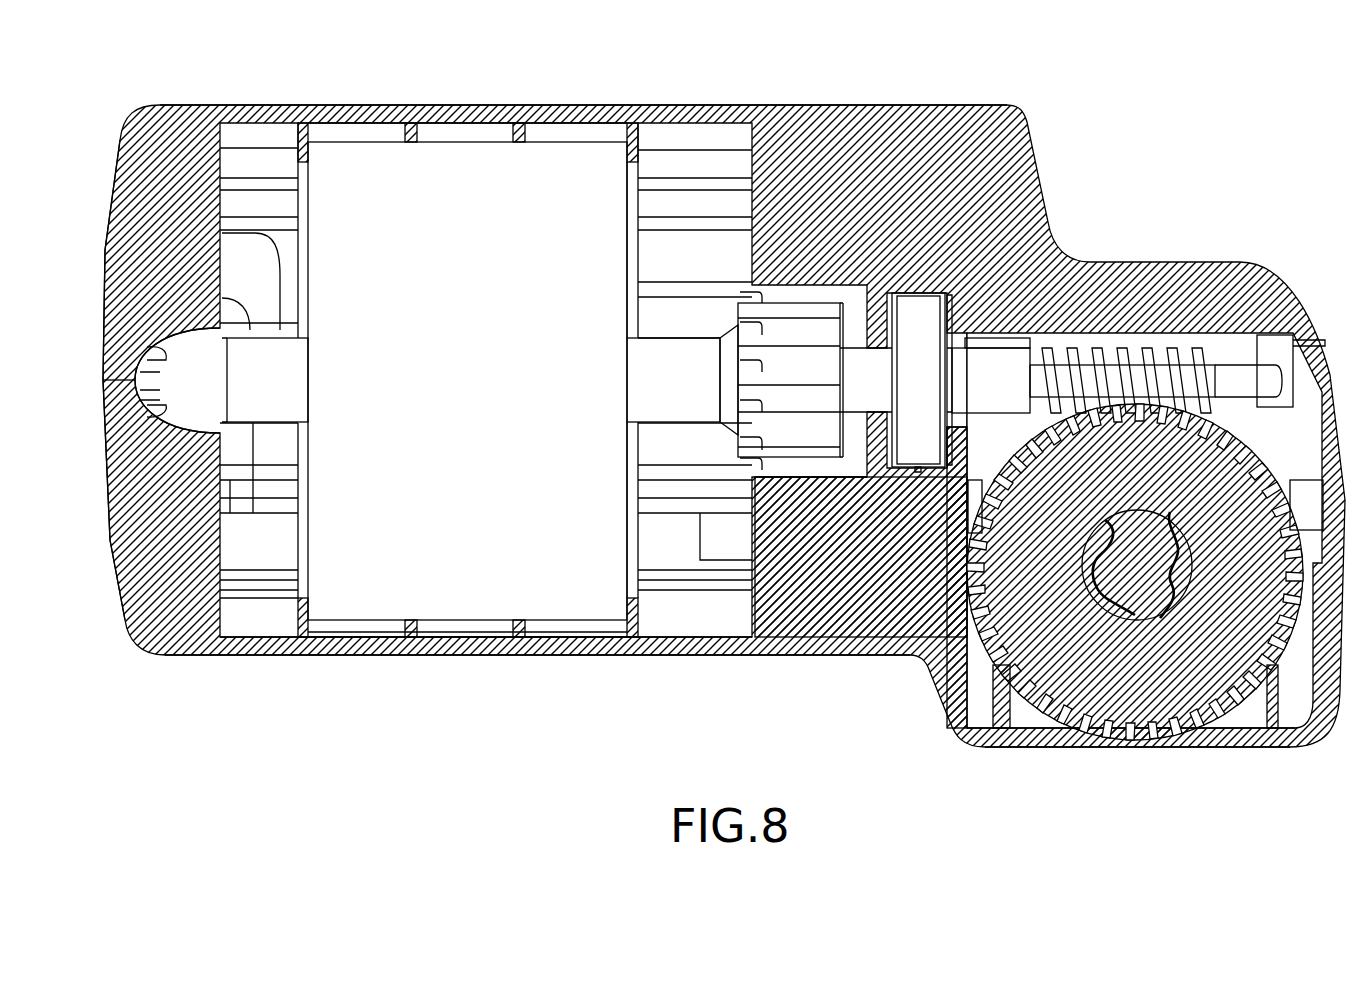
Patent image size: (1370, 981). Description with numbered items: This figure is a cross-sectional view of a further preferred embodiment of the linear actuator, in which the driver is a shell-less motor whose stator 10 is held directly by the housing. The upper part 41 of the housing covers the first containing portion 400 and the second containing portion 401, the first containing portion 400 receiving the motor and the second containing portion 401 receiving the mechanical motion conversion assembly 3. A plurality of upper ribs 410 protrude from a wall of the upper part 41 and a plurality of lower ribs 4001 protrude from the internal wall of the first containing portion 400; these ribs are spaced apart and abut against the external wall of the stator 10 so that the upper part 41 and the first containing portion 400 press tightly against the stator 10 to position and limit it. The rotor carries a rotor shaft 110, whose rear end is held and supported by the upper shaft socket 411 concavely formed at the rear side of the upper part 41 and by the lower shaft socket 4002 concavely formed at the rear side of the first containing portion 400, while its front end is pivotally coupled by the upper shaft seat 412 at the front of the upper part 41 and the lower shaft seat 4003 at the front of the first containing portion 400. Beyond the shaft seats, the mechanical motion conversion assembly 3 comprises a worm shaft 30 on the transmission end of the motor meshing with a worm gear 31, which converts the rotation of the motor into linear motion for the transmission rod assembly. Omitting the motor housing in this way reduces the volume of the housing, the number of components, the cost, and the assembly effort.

The mechanical motion conversion assembly 3 is at (1157, 207).
The stator 10 is at (371, 587).
The worm shaft 30 is at (1153, 357).
The worm gear 31 is at (1228, 420).
The upper part 41 is at (543, 105).
The rotor shaft 110 is at (267, 367).
The first containing portion 400 is at (488, 655).
The second containing portion 401 is at (1193, 747).
The upper ribs 410 is at (367, 105).
The upper shaft socket 411 is at (104, 305).
The upper shaft seat 412 is at (876, 305).
The lower ribs 4001 is at (418, 635).
The lower shaft socket 4002 is at (105, 460).
The lower shaft seat 4003 is at (878, 447).